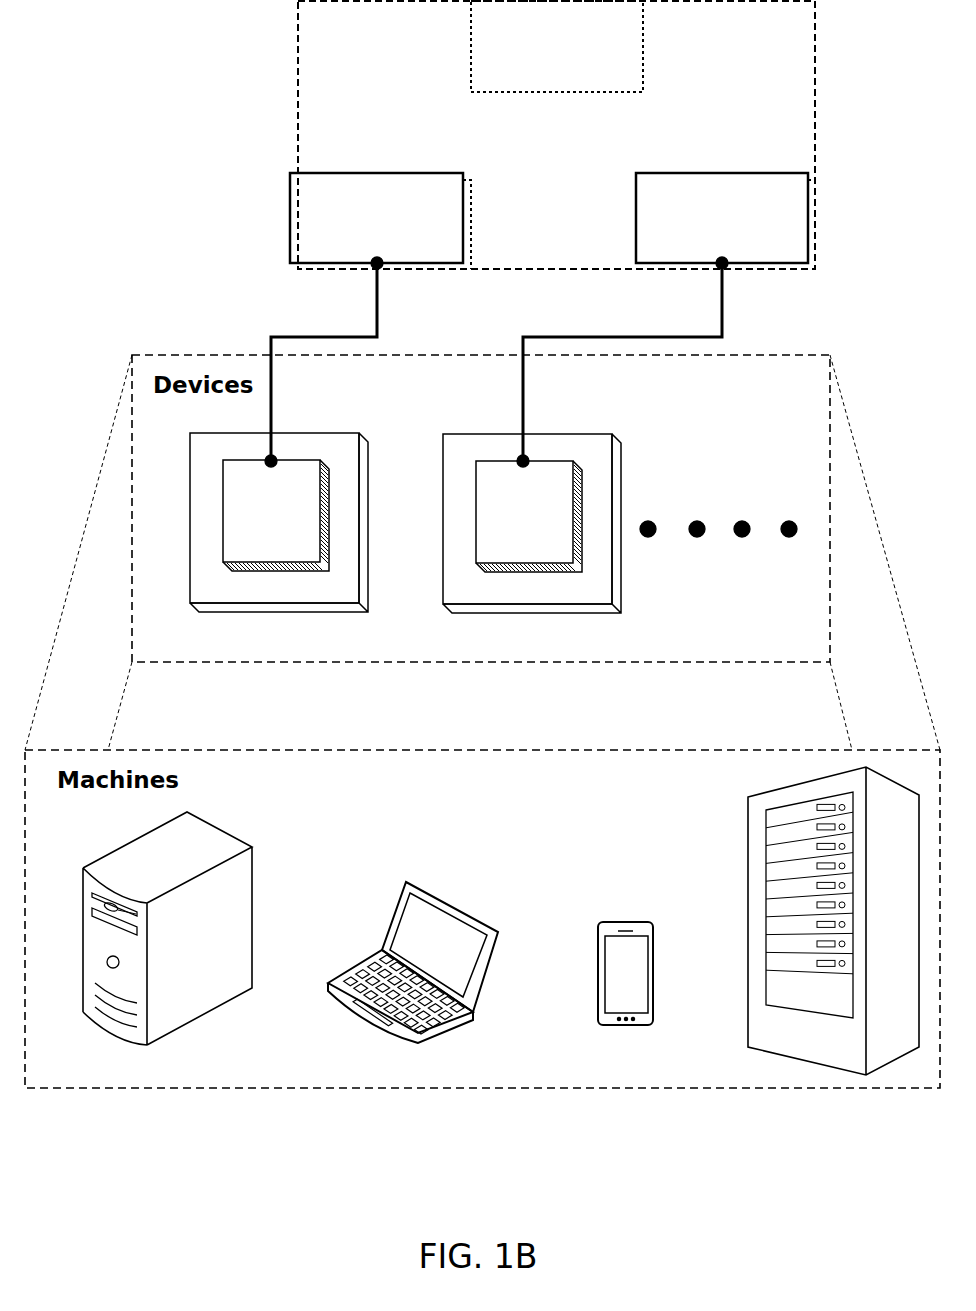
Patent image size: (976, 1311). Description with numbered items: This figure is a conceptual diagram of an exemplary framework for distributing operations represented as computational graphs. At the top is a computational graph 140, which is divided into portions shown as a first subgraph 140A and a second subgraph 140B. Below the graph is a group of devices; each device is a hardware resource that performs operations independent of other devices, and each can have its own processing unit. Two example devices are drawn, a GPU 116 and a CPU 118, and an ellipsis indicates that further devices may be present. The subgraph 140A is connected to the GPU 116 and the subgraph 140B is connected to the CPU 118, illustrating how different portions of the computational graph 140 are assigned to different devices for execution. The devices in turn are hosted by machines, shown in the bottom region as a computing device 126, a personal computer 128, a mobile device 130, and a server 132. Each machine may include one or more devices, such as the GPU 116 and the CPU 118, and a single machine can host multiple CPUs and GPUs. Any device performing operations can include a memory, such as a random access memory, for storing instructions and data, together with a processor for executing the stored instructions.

The computational graph 140 is at (556, 135).
The subgraph 140A is at (376, 218).
The subgraph 140B is at (722, 218).
The GPU 116 is at (279, 522).
The CPU 118 is at (532, 523).
The computing device 126 is at (228, 832).
The personal computer 128 is at (393, 908).
The mobile device 130 is at (628, 922).
The server 132 is at (747, 826).